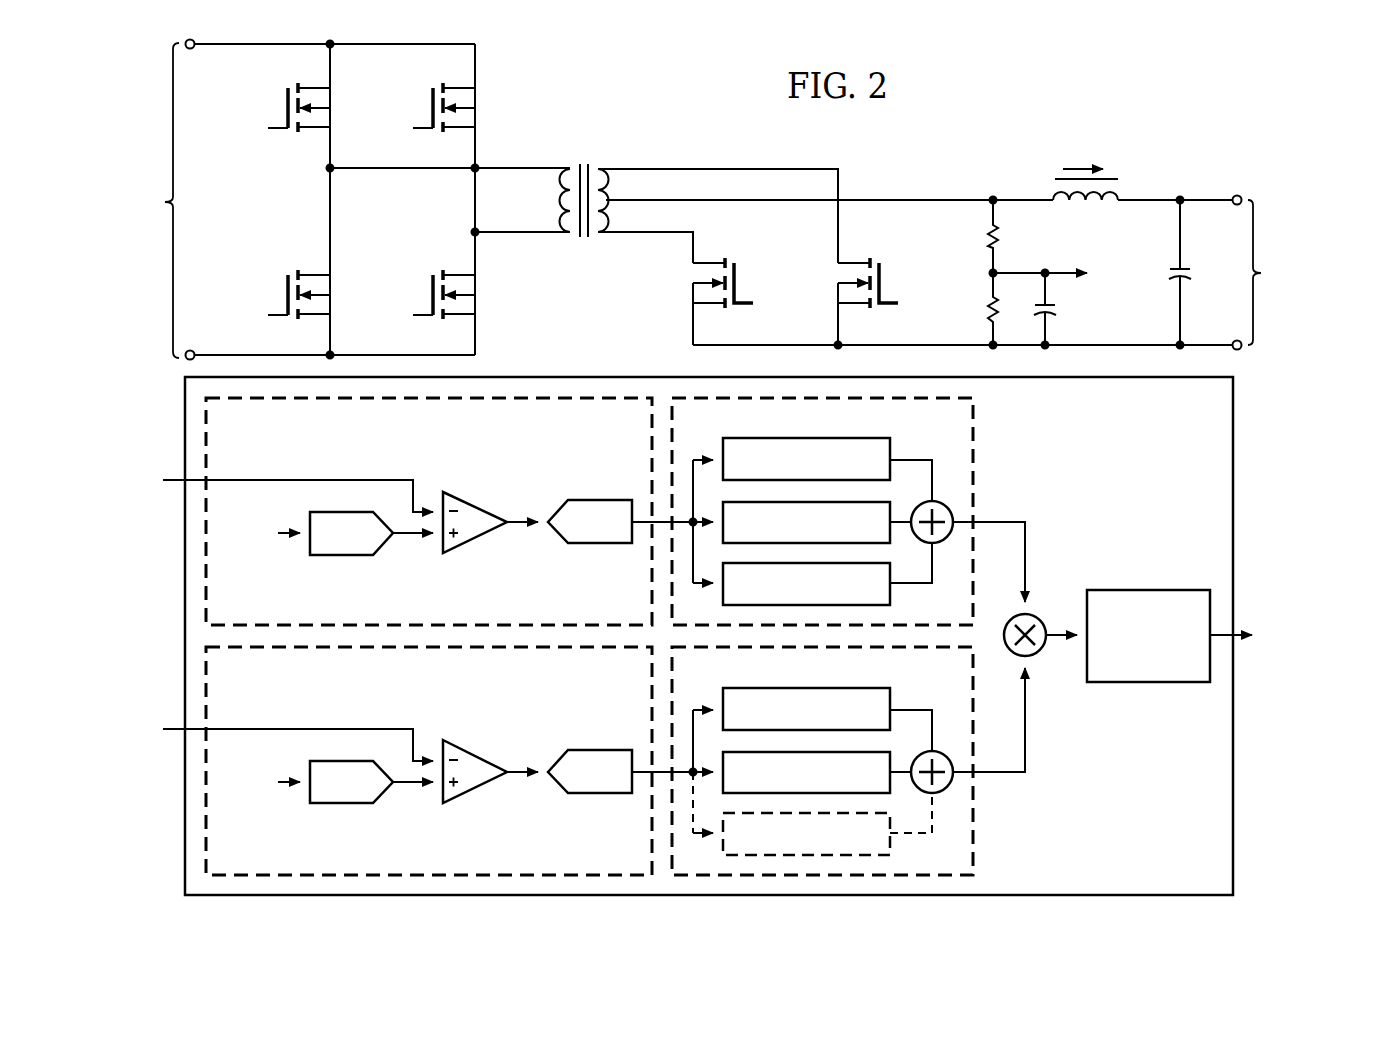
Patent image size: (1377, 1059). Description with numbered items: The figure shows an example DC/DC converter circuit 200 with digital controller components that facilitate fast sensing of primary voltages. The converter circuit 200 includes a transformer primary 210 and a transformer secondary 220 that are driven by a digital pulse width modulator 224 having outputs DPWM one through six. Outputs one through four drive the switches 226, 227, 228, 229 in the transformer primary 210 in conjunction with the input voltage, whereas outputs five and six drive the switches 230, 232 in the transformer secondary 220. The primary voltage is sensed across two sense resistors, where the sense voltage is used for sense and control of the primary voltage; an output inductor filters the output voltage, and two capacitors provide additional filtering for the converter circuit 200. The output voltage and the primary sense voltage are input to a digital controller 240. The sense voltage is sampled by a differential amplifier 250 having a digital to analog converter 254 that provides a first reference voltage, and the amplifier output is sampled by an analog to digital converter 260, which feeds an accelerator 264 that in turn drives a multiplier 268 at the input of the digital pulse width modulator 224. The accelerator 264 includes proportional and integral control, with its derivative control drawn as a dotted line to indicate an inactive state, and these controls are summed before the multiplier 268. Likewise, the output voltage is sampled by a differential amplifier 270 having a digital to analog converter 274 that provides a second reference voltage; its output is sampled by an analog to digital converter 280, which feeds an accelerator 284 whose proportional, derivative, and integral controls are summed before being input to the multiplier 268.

The DC/DC converter circuit 200 is at (1152, 106).
The transformer primary 210 is at (548, 233).
The transformer secondary 220 is at (619, 166).
The digital pulse width modulator 224 is at (1150, 683).
The switch 226 is at (287, 95).
The switch 227 is at (287, 282).
The switch 228 is at (432, 95).
The switch 229 is at (432, 282).
The switch 230 is at (737, 273).
The switch 232 is at (882, 273).
The digital controller 240 is at (1147, 523).
The differential amplifier 250 is at (477, 790).
The digital to analog converter 254 is at (340, 805).
The analog to digital converter 260 is at (600, 794).
The accelerator 264 is at (985, 823).
The multiplier 268 is at (1050, 651).
The differential amplifier 270 is at (477, 541).
The digital to analog converter 274 is at (340, 556).
The analog to digital converter 280 is at (600, 545).
The accelerator 284 is at (985, 448).